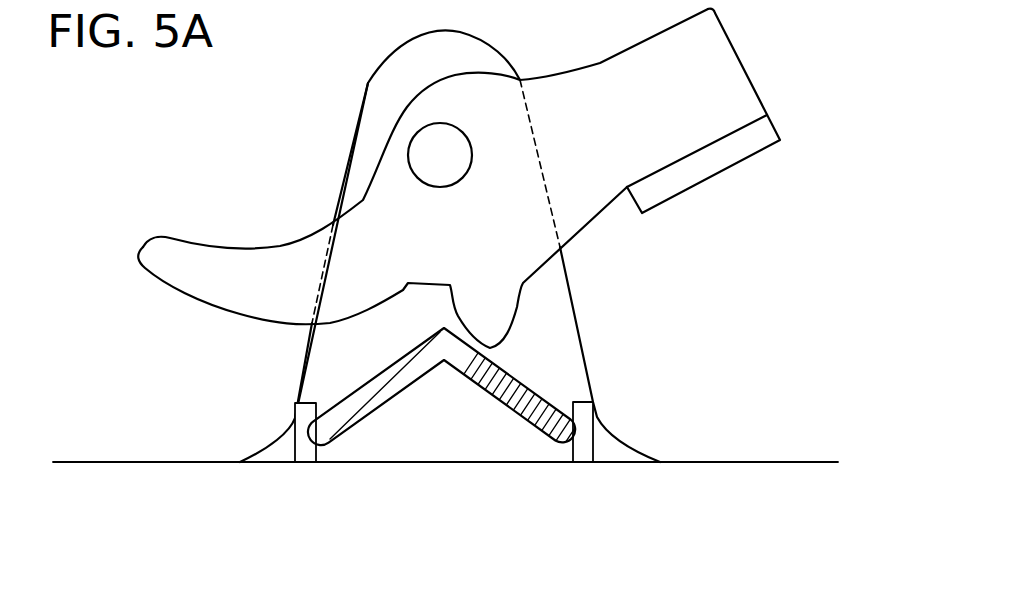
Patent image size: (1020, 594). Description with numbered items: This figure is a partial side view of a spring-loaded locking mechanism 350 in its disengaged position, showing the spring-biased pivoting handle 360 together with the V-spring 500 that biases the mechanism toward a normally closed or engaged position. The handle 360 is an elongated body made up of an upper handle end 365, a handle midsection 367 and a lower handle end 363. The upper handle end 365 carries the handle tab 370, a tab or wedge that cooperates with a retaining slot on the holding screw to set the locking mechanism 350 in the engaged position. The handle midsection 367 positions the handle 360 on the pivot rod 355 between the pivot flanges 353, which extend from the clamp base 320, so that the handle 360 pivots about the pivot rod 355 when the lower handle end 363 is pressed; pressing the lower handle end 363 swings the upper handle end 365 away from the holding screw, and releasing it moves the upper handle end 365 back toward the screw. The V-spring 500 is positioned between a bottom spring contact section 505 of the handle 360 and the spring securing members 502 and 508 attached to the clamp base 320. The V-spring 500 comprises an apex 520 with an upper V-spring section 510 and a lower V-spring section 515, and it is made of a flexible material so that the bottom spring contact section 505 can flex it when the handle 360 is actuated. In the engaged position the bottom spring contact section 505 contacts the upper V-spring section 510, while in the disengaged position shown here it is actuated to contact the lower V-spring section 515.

The clamp base 320 is at (162, 461).
The spring-loaded locking mechanism 350 is at (832, 376).
The pivot flanges 353 is at (502, 47).
The pivot rod 355 is at (461, 167).
The spring-biased pivoting handle 360 is at (331, 143).
The lower handle end 363 is at (195, 240).
The upper handle end 365 is at (737, 77).
The handle midsection 367 is at (437, 89).
The handle tab 370 is at (748, 143).
The V-spring 500 is at (493, 438).
The spring securing member 502 is at (298, 425).
The bottom spring contact section 505 is at (503, 312).
The spring securing member 508 is at (587, 425).
The upper V-spring section 510 is at (510, 409).
The lower V-spring section 515 is at (413, 372).
The apex 520 is at (397, 360).